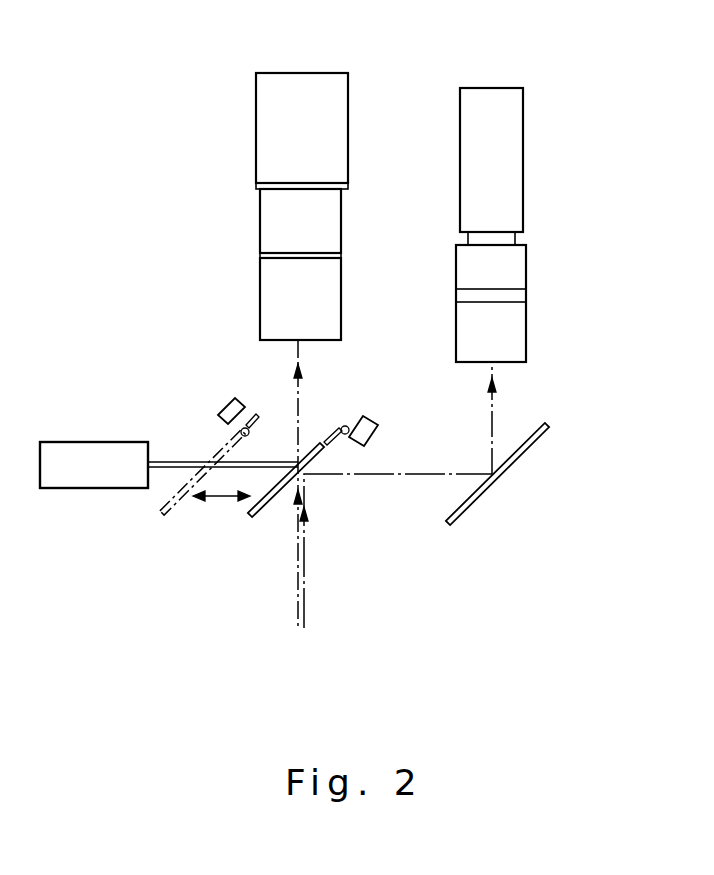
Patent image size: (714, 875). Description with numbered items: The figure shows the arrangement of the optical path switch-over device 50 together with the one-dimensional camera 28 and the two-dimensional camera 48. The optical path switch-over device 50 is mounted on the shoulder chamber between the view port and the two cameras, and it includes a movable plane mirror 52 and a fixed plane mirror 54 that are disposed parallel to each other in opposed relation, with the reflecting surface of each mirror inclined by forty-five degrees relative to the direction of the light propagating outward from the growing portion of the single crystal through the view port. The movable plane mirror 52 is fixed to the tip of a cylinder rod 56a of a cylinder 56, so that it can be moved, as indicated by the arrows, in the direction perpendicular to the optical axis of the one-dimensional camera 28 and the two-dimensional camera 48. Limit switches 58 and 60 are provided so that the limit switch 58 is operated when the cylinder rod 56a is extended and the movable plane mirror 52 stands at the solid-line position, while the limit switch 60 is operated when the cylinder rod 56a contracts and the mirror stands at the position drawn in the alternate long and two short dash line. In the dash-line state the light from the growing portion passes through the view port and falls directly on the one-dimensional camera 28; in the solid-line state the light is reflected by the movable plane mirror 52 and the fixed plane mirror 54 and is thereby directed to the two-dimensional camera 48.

The one-dimensional camera 28 is at (309, 73).
The two-dimensional camera 48 is at (484, 88).
The optical path switch-over device 50 is at (98, 513).
The movable plane mirror 52 is at (170, 501).
The fixed plane mirror 54 is at (463, 513).
The cylinder 56 is at (95, 442).
The cylinder rod 56a is at (184, 462).
The limit switch 58 is at (370, 416).
The limit switch 60 is at (232, 398).